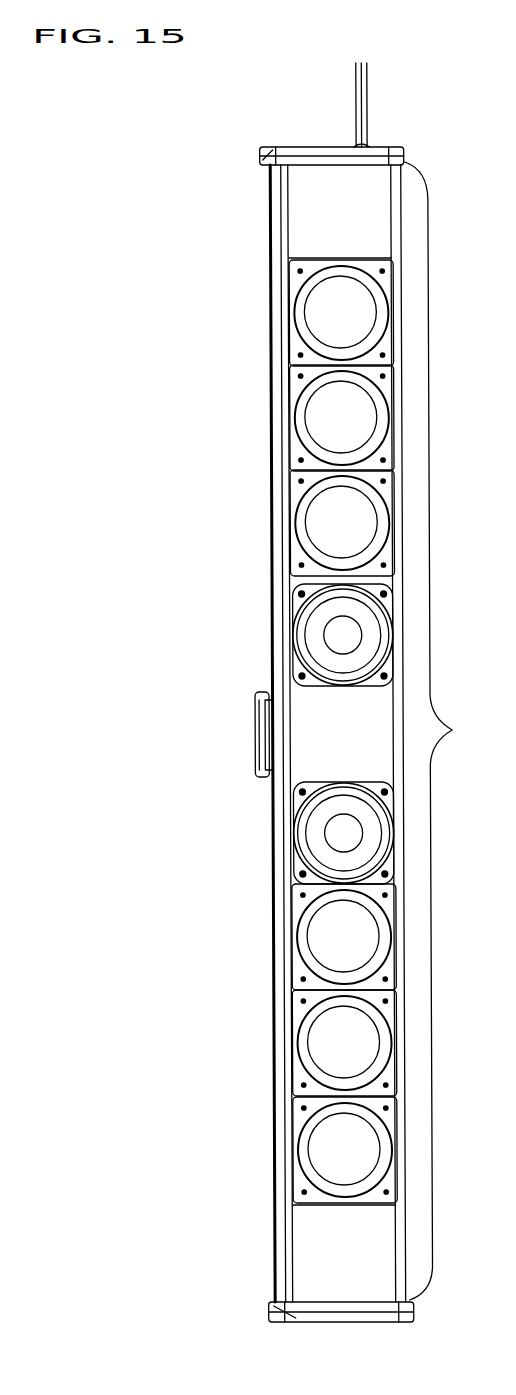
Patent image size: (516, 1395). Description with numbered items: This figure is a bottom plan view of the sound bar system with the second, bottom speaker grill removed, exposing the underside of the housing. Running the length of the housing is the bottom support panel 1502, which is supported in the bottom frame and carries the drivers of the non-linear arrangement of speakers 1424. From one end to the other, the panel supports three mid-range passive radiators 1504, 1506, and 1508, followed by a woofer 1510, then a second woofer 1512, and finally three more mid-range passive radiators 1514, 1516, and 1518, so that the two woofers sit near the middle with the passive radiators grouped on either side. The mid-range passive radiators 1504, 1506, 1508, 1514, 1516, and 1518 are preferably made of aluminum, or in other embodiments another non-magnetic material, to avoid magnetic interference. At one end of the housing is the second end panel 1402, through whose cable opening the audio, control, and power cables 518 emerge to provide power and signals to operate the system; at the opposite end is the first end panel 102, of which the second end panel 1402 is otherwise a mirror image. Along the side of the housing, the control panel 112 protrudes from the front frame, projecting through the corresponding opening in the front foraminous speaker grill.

The second end panel 1402 is at (322, 146).
The bottom support panel 1502 is at (345, 222).
The mid-range passive radiator 1504 is at (335, 316).
The mid-range passive radiator 1506 is at (335, 410).
The mid-range passive radiator 1508 is at (338, 522).
The woofer 1510 is at (333, 625).
The woofer 1512 is at (333, 833).
The mid-range passive radiator 1514 is at (315, 935).
The mid-range passive radiator 1516 is at (335, 1042).
The mid-range passive radiator 1518 is at (355, 1145).
The control panel 112 is at (258, 733).
The first end panel 102 is at (275, 1317).
The audio, control, and power cables 518 is at (360, 92).
The non-linear arrangement of speakers 1424 is at (457, 731).